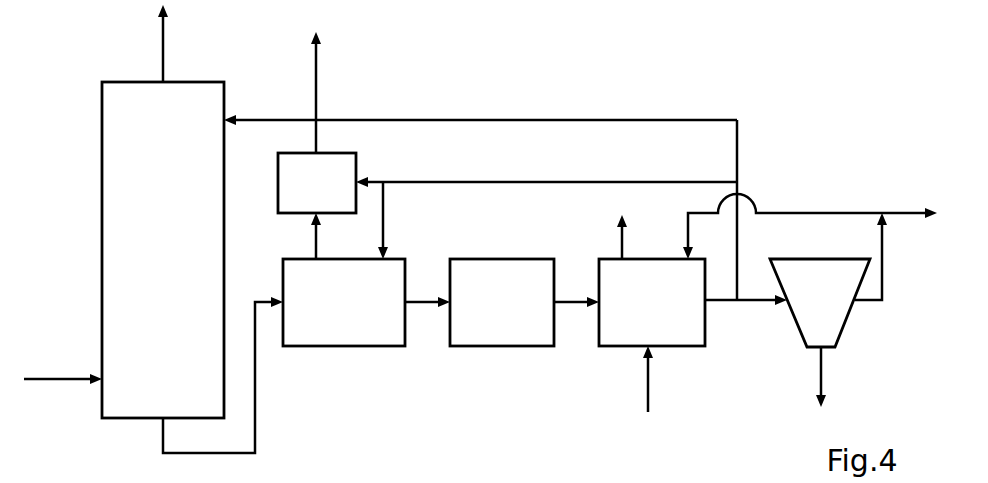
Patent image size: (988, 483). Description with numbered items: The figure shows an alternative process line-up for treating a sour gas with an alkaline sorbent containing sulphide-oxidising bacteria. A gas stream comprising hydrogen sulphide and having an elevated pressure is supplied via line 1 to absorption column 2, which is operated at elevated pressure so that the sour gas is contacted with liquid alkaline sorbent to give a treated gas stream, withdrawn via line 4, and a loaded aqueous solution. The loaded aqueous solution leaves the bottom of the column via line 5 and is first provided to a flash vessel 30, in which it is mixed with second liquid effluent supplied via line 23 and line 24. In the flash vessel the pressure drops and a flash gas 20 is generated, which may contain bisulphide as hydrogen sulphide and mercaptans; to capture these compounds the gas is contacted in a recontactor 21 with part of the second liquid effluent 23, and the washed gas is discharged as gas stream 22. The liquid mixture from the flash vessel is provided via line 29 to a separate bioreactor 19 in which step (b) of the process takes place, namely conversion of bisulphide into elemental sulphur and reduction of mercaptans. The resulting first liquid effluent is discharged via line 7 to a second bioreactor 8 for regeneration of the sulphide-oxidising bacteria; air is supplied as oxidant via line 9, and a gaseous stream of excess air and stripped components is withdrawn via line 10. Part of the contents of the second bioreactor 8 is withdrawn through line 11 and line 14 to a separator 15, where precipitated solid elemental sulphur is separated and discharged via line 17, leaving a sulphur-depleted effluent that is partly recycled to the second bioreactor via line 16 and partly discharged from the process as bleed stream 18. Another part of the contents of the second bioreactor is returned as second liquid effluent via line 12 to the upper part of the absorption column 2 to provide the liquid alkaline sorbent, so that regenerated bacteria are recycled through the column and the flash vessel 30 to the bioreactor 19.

The line 1 is at (59, 378).
The absorption column 2 is at (154, 315).
The line 4 is at (164, 32).
The line 5 is at (256, 400).
The line 7 is at (573, 305).
The second bioreactor 8 is at (640, 313).
The line 9 is at (650, 373).
The line 10 is at (621, 228).
The recycle line 11 is at (725, 303).
The line 12 is at (575, 118).
The line to compressor 14 is at (763, 303).
The separator 15 is at (804, 313).
The line 16 is at (822, 211).
The line 17 is at (822, 377).
The bleed stream 18 is at (895, 211).
The bioreactor 19 is at (484, 313).
The flash gas 20 is at (314, 236).
The recontactor 21 is at (303, 196).
The gas stream 22 is at (317, 70).
The second liquid effluent 23 is at (572, 180).
The second liquid effluent 24 is at (384, 215).
The line 29 is at (423, 305).
The flash vessel 30 is at (329, 313).